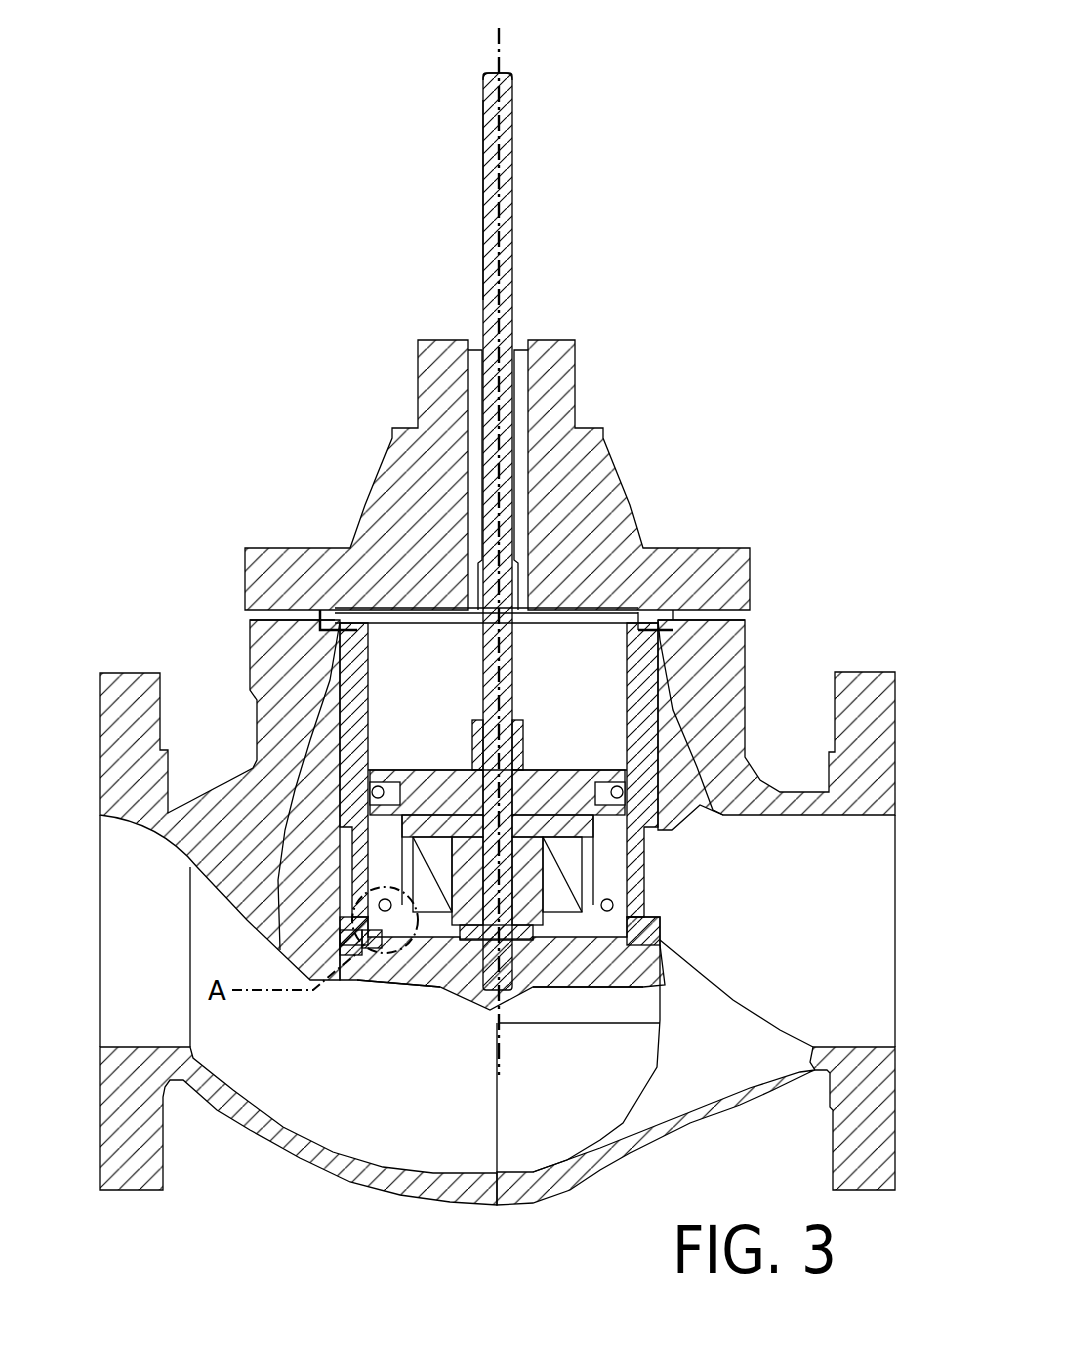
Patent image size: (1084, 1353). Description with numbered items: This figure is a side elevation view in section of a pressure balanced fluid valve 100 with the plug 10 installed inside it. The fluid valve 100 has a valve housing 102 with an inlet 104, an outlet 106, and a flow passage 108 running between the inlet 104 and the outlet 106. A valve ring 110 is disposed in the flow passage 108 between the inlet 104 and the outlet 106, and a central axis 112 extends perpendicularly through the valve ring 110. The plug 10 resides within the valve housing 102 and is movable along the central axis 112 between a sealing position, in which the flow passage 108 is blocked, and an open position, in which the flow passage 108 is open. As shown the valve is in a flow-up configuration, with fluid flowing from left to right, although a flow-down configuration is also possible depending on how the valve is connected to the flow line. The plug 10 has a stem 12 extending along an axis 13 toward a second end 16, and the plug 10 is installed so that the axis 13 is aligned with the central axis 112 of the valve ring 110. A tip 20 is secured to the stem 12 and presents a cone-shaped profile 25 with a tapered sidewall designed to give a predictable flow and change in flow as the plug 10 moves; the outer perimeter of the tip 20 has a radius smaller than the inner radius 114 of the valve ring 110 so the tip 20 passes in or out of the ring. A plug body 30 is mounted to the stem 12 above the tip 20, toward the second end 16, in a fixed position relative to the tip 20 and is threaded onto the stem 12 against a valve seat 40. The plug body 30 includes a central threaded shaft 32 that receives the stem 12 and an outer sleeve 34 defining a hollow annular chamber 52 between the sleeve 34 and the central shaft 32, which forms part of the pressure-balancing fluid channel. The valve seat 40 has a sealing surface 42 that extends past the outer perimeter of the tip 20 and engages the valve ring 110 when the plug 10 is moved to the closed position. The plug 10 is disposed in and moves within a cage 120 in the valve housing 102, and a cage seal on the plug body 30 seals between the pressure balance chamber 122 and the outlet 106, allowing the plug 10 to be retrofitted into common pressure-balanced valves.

The fluid valve 100 is at (228, 374).
The valve housing 102 is at (247, 675).
The inlet 104 is at (153, 925).
The outlet 106 is at (845, 930).
The flow passage 108 is at (445, 1130).
The valve ring 110 is at (366, 948).
The central axis 112 is at (497, 63).
The inner radius 114 is at (377, 950).
The cage 120 is at (352, 750).
The pressure balance chamber 122 is at (585, 698).
The stem 12 is at (484, 303).
The axis 13 is at (500, 254).
The second end 16 is at (484, 172).
The plug 10 is at (468, 1003).
The tip 20 is at (542, 982).
The cone-shaped profile 25 is at (530, 1005).
The plug body 30 is at (605, 826).
The central threaded shaft 32 is at (585, 778).
The outer sleeve 34 is at (600, 878).
The valve seat 40 is at (618, 918).
The sealing surface 42 is at (618, 935).
The annular chamber 52 is at (425, 882).